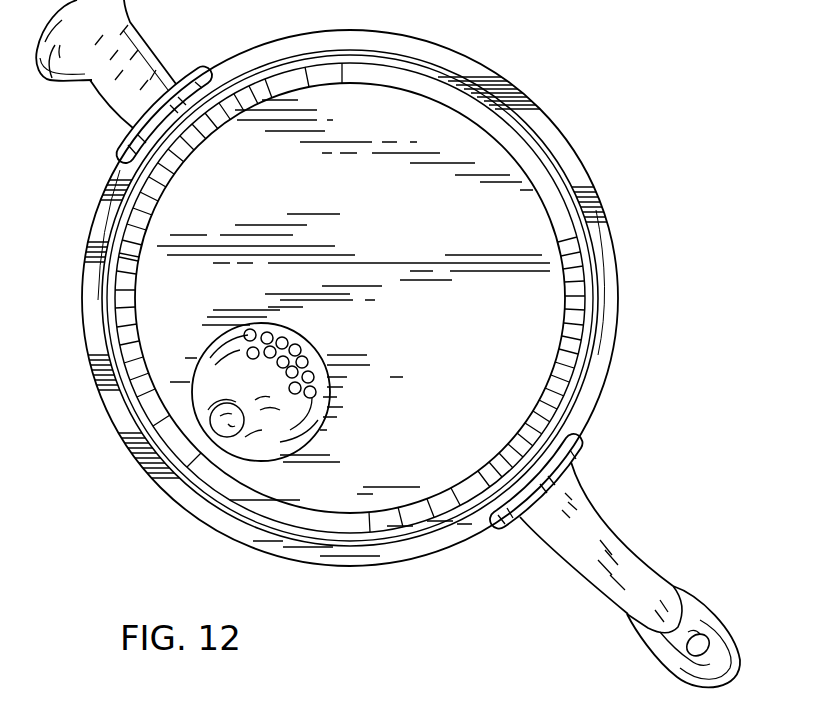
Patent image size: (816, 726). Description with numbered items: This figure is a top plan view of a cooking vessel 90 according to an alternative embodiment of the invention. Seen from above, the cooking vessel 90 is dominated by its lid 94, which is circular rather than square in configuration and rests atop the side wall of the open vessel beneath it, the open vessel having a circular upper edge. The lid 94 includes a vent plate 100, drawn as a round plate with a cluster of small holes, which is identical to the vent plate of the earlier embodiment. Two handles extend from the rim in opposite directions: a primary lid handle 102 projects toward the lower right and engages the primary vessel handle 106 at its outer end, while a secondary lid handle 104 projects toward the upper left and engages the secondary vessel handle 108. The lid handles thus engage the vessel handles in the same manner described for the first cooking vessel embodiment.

The cooking vessel 90 is at (613, 143).
The lid 94 is at (417, 222).
The vent plate 100 is at (300, 432).
The primary lid handle 102 is at (610, 540).
The secondary lid handle 104 is at (177, 80).
The primary vessel handle 106 is at (652, 640).
The secondary vessel handle 108 is at (53, 78).